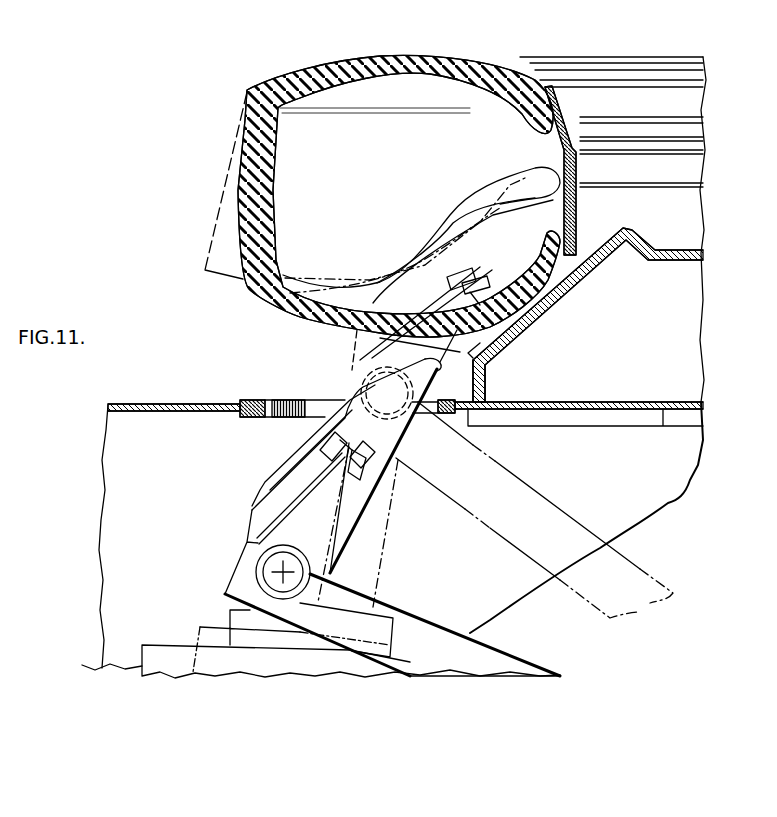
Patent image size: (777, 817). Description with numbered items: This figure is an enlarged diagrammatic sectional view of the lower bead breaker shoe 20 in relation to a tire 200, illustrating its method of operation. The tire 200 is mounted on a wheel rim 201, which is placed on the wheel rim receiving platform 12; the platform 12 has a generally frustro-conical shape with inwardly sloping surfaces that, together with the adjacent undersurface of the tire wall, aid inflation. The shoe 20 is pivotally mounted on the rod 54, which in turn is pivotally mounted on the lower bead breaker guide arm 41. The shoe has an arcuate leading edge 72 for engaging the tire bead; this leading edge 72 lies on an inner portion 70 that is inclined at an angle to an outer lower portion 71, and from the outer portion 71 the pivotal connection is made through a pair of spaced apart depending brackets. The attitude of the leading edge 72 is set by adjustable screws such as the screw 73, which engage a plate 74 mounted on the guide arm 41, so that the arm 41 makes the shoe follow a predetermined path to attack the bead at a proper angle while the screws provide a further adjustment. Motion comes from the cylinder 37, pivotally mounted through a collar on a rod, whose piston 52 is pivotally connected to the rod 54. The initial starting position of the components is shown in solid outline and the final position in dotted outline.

The tire 200 is at (425, 54).
The wheel rim 201 is at (573, 115).
The wheel rim receiving platform 12 is at (588, 283).
The arcuate leading edge 72 is at (444, 364).
The lower bead breaker shoe 20 is at (313, 477).
The inner portion 70 is at (368, 378).
The adjustable screw 73 is at (318, 437).
The outer portion 71 is at (282, 465).
The plate 74 is at (300, 490).
The rod 54 is at (257, 572).
The piston 52 is at (245, 618).
The cylinder 37 is at (163, 660).
The lower bead breaker guide arm 41 is at (430, 640).